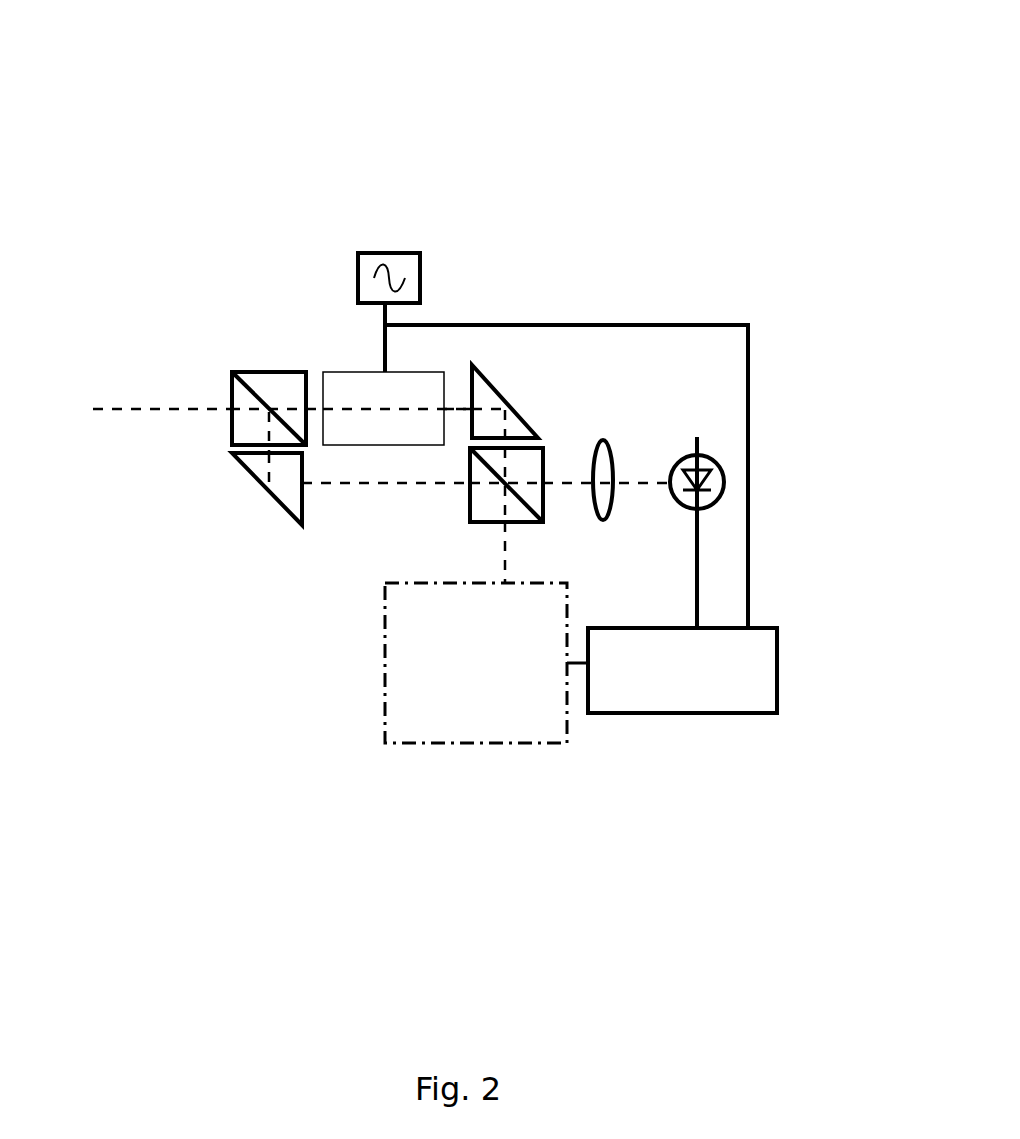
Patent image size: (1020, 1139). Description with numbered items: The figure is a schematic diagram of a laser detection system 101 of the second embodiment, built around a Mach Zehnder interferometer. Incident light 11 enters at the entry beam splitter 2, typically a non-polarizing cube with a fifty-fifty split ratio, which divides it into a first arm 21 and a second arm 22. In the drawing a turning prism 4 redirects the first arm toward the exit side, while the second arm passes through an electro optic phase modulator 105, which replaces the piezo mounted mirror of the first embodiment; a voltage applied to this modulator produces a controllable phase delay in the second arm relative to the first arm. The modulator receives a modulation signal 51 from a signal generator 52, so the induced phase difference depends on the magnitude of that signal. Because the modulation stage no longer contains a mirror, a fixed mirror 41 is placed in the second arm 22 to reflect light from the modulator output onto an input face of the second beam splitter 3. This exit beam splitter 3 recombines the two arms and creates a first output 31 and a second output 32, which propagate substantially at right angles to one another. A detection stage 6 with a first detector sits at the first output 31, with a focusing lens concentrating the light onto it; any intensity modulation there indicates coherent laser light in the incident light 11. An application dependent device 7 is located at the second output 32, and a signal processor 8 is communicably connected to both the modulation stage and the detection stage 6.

The laser detection system of the second embodiment 101 is at (710, 95).
The incident light 11 is at (161, 391).
The beam splitter 2 is at (260, 372).
The deflection prism 4 is at (250, 473).
The first arm 21 is at (368, 490).
The second arm 22 is at (454, 405).
The electro optic phase modulator 105 is at (352, 370).
The modulation signal 51 is at (383, 347).
The signal generator 52 is at (410, 253).
The fixed mirror 41 is at (525, 413).
The second beam splitter 3 is at (552, 462).
The first output 31 is at (643, 483).
The detection stage 6 is at (717, 468).
The second output 32 is at (492, 545).
The application dependent device 7 is at (486, 663).
The signal processor 8 is at (682, 670).